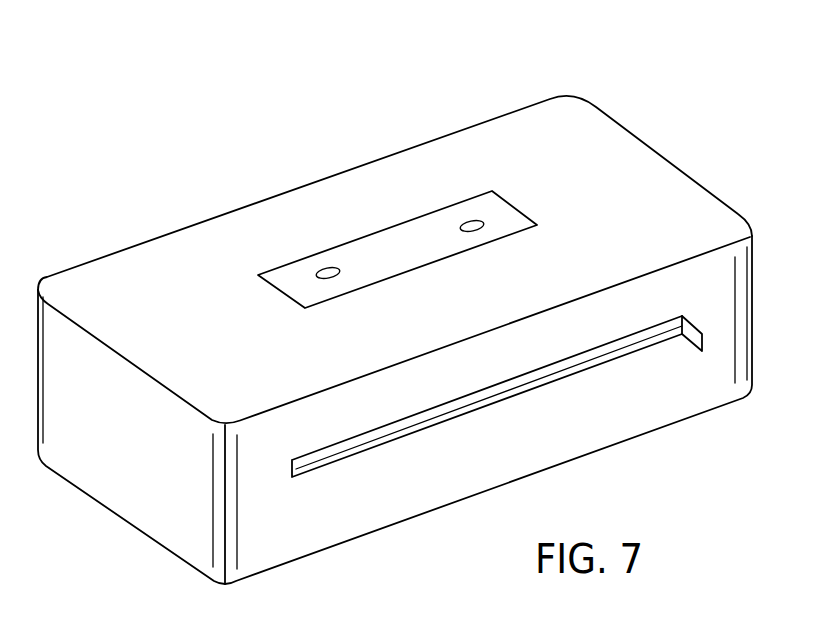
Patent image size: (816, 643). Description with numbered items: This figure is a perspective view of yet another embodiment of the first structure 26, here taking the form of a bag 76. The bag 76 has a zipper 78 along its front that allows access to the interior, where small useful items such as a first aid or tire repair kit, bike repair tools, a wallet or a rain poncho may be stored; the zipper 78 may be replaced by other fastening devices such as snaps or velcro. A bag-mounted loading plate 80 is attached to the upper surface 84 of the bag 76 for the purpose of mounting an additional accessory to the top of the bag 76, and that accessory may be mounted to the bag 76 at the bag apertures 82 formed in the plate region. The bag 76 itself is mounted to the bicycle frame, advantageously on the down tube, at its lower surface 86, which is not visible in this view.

The first structure 26 is at (122, 184).
The bag 76 is at (603, 157).
The zipper 78 is at (425, 415).
The bag-mounted loading plate 80 is at (418, 243).
The bag apertures 82 is at (328, 278).
The upper surface 84 is at (645, 234).
The lower surface 86 is at (713, 420).